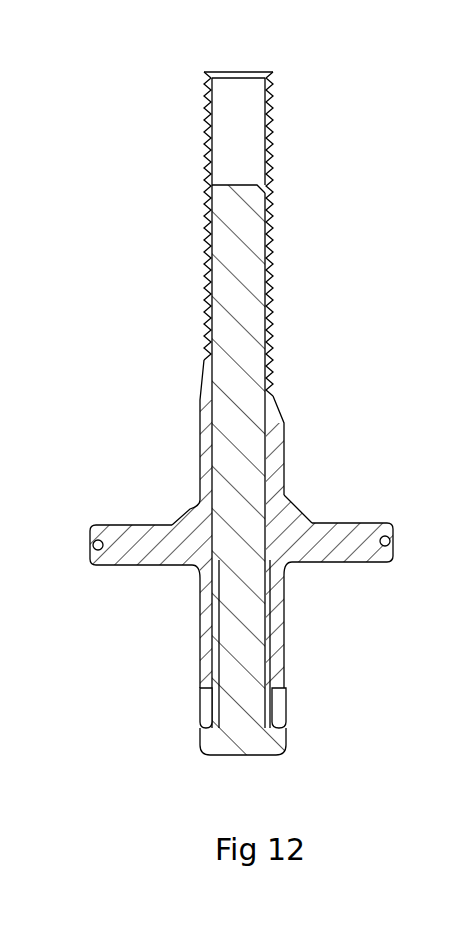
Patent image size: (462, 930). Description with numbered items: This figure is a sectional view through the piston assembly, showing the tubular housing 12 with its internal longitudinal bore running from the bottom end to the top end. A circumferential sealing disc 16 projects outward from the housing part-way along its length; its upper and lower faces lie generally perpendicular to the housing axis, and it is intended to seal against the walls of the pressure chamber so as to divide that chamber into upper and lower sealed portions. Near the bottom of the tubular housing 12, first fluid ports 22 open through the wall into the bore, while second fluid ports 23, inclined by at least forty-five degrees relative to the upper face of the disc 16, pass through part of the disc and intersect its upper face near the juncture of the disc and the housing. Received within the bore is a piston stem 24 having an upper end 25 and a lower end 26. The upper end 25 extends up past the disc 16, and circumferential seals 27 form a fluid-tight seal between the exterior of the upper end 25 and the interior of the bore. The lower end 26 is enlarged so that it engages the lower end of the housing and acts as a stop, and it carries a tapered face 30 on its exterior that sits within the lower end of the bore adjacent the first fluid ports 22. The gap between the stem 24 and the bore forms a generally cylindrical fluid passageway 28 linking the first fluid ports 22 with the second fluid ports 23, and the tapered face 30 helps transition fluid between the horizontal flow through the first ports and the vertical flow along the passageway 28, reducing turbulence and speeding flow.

The tubular housing 12 is at (205, 242).
The circumferential sealing disc 16 is at (100, 566).
The first fluid port 22 is at (207, 697).
The second fluid port 23 is at (178, 516).
The piston stem 24 is at (272, 505).
The upper end 25 is at (262, 189).
The lower end 26 is at (266, 745).
The circumferential seal 27 is at (264, 300).
The fluid passageway 28 is at (213, 613).
The tapered face 30 is at (273, 697).